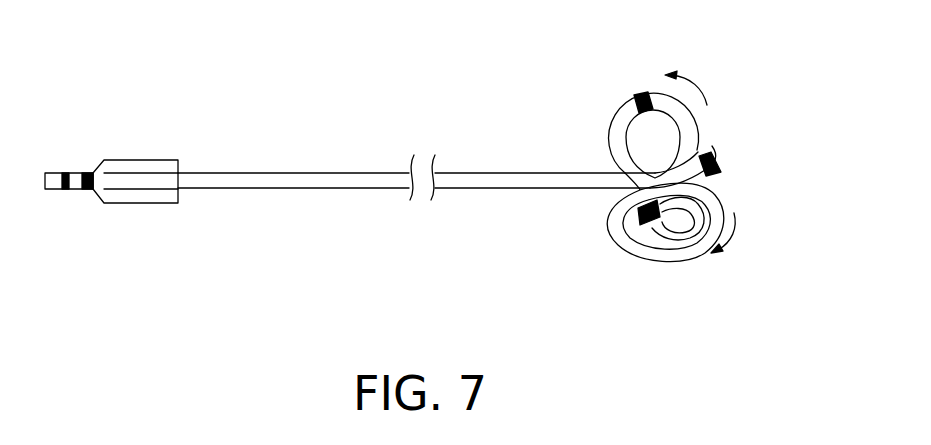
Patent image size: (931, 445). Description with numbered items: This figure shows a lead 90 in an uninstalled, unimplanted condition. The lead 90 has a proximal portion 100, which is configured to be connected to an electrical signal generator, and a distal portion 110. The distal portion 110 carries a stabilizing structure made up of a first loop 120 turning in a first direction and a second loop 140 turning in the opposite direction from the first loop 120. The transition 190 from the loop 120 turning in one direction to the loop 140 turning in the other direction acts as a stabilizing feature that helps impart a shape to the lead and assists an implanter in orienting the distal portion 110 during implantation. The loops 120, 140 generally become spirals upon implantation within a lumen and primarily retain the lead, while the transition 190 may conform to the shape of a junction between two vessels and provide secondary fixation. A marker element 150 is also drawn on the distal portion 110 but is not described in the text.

The lead 90 is at (477, 65).
The proximal portion 100 is at (50, 267).
The distal portion 110 is at (737, 268).
The first loop 120 is at (613, 142).
The second loop 140 is at (723, 203).
The marker band 150 is at (720, 157).
The transition 190 is at (637, 213).